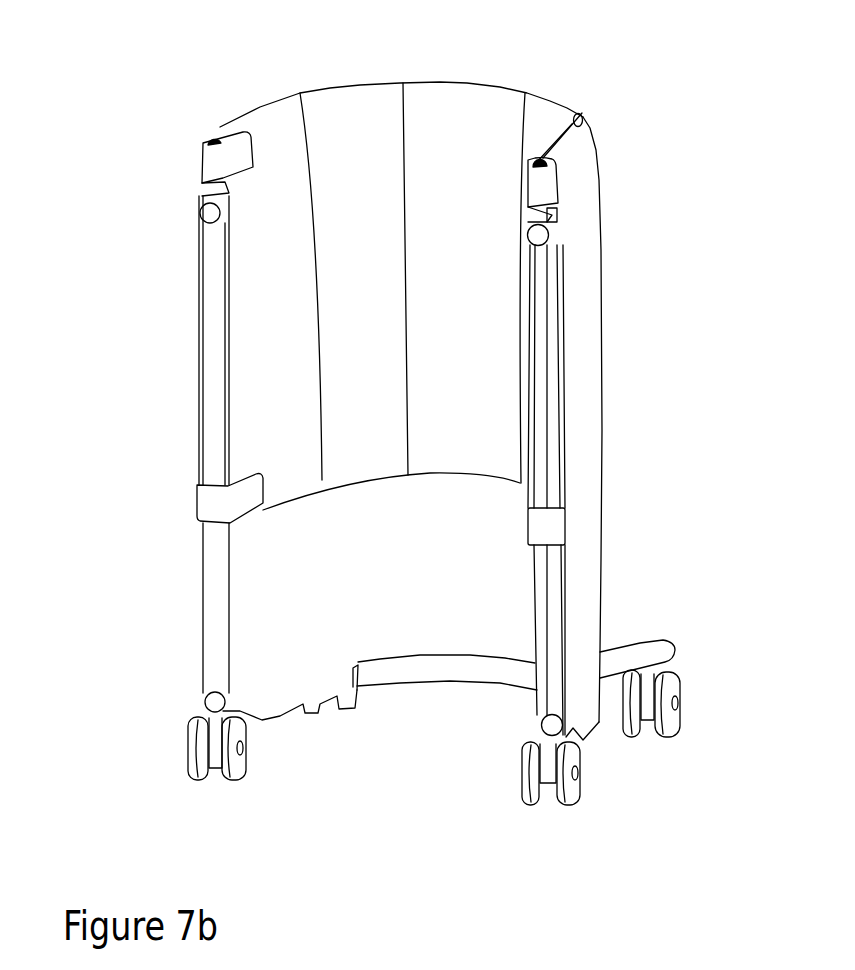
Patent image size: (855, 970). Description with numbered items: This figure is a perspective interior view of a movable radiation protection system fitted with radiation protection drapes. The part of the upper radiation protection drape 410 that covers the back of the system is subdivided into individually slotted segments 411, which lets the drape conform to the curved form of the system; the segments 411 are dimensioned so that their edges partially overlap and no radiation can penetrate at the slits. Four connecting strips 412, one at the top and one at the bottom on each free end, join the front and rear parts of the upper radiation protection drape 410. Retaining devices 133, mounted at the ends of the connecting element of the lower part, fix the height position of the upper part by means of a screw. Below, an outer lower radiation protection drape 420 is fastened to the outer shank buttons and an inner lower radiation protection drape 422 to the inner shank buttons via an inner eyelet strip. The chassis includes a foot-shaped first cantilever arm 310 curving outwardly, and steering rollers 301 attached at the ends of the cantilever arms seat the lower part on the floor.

The upper radiation protection drape 410 is at (583, 170).
The segments 411 is at (273, 127).
The connecting strips 412 is at (208, 162).
The retaining device 133 is at (205, 217).
The outer lower radiation protection drape 420 is at (585, 595).
The inner lower radiation protection drape 422 is at (280, 628).
The first cantilever arm 310 is at (620, 662).
The steering rollers 301 is at (236, 780).